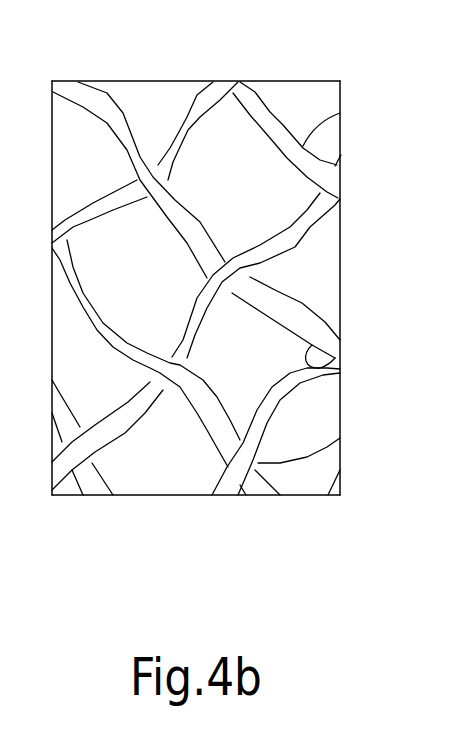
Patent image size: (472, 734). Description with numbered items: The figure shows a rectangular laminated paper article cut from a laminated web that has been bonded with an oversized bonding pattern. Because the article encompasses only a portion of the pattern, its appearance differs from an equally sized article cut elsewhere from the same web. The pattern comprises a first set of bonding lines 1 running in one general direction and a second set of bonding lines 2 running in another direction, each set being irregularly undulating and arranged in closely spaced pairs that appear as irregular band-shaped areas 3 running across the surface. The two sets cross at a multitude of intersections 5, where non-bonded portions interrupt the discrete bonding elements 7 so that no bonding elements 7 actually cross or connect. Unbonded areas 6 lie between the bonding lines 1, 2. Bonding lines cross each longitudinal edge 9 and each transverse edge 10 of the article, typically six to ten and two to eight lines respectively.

The first set of bonding lines 1 is at (75, 303).
The second set of bonding lines 2 is at (342, 372).
The band-shaped areas 3 is at (318, 225).
The intersections 5 is at (340, 438).
The unbonded areas 6 is at (243, 142).
The bonding elements 7 is at (318, 132).
The longitudinal edge 9 is at (52, 137).
The transverse edge 10 is at (190, 79).